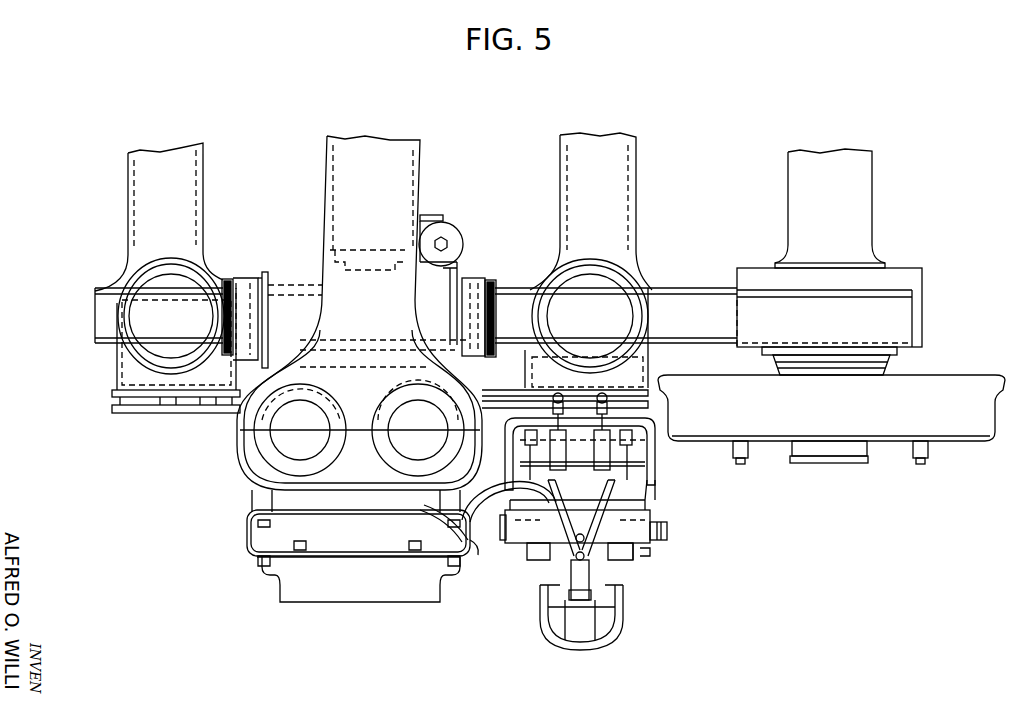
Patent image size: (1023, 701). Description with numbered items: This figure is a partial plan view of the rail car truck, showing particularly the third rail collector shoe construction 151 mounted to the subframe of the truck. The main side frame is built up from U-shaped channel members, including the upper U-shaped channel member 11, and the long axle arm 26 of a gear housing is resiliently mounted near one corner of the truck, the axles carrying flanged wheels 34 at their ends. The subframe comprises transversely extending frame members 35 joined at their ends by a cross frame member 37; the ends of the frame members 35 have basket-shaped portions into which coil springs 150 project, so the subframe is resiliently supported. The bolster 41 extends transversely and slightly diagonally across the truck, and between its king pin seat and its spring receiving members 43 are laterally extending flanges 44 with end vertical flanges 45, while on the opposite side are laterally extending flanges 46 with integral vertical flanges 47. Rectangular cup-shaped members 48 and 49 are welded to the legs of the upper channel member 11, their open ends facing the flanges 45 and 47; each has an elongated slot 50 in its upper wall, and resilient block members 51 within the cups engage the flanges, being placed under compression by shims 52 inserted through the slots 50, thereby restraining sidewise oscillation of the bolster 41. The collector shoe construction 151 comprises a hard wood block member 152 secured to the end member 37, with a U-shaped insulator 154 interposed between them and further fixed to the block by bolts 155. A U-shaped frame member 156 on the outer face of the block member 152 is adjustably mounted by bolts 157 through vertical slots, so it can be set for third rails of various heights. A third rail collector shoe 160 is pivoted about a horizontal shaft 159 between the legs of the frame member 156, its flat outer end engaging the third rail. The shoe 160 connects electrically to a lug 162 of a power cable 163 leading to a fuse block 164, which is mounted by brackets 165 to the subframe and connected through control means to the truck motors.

The upper U-shaped channel member 11 is at (100, 299).
The long axle arm 26 is at (858, 183).
The flanged wheel 34 is at (976, 434).
The transversely extending frame member 35 is at (188, 167).
The cross frame member 37 is at (176, 413).
The bolster 41 is at (438, 198).
The spring receiving member 43 is at (333, 490).
The laterally extending flange 44 is at (318, 312).
The end vertical flange 45 is at (269, 312).
The laterally extending flange 46 is at (427, 266).
The vertical flange 47 is at (449, 314).
The rectangular cup-shaped member 48 is at (253, 277).
The rectangular cup-shaped member 49 is at (470, 290).
The elongated slot 50 is at (229, 280).
The resilient block member 51 is at (246, 283).
The shim 52 is at (497, 283).
The coil spring 150 is at (152, 277).
The third rail collector shoe construction 151 is at (526, 582).
The block member 152 is at (636, 454).
The U-shaped insulator 154 is at (656, 444).
The bolt 155 is at (562, 420).
The U-shaped frame member 156 is at (648, 504).
The bolt 157 is at (535, 438).
The horizontal shaft 159 is at (650, 549).
The third rail collector shoe 160 is at (613, 623).
The lug 162 is at (587, 512).
The power cable 163 is at (450, 536).
The fuse block 164 is at (392, 598).
The bracket 165 is at (246, 525).